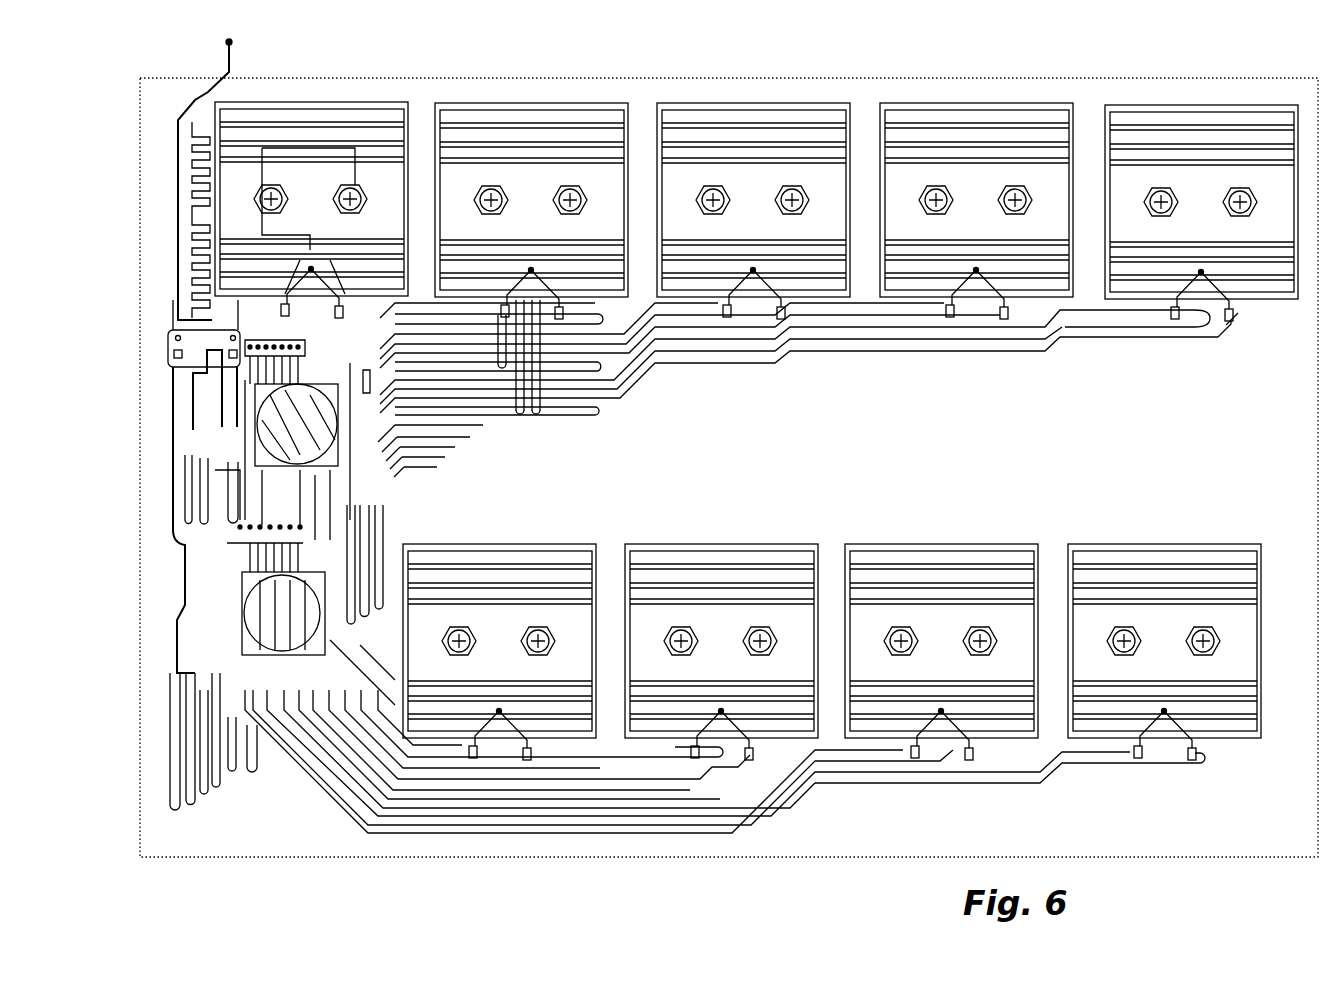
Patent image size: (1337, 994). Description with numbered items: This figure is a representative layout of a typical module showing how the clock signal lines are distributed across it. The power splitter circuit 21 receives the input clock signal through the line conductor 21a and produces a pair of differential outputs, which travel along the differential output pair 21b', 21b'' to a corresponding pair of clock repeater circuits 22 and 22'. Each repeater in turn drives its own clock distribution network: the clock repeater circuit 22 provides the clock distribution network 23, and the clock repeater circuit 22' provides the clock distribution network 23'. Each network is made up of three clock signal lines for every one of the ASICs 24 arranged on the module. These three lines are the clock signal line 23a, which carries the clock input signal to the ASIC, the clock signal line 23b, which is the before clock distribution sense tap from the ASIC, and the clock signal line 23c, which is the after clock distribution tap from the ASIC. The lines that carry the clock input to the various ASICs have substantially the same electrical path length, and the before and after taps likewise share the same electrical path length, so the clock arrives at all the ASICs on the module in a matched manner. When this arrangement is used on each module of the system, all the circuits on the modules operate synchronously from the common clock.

The power splitter circuit 21 is at (168, 347).
The line conductor 21a is at (226, 44).
The differential output pair 21b' is at (142, 520).
The differential output pair 21b'' is at (162, 391).
The clock repeater circuit 22 is at (218, 403).
The clock repeater circuit 22' is at (209, 590).
The clock distribution network 23 is at (799, 373).
The clock distribution network 23' is at (725, 768).
The clock signal line 23a is at (1238, 320).
The clock signal line 23b is at (1216, 327).
The clock signal line 23c is at (1124, 330).
The ASIC 24 is at (1197, 108).